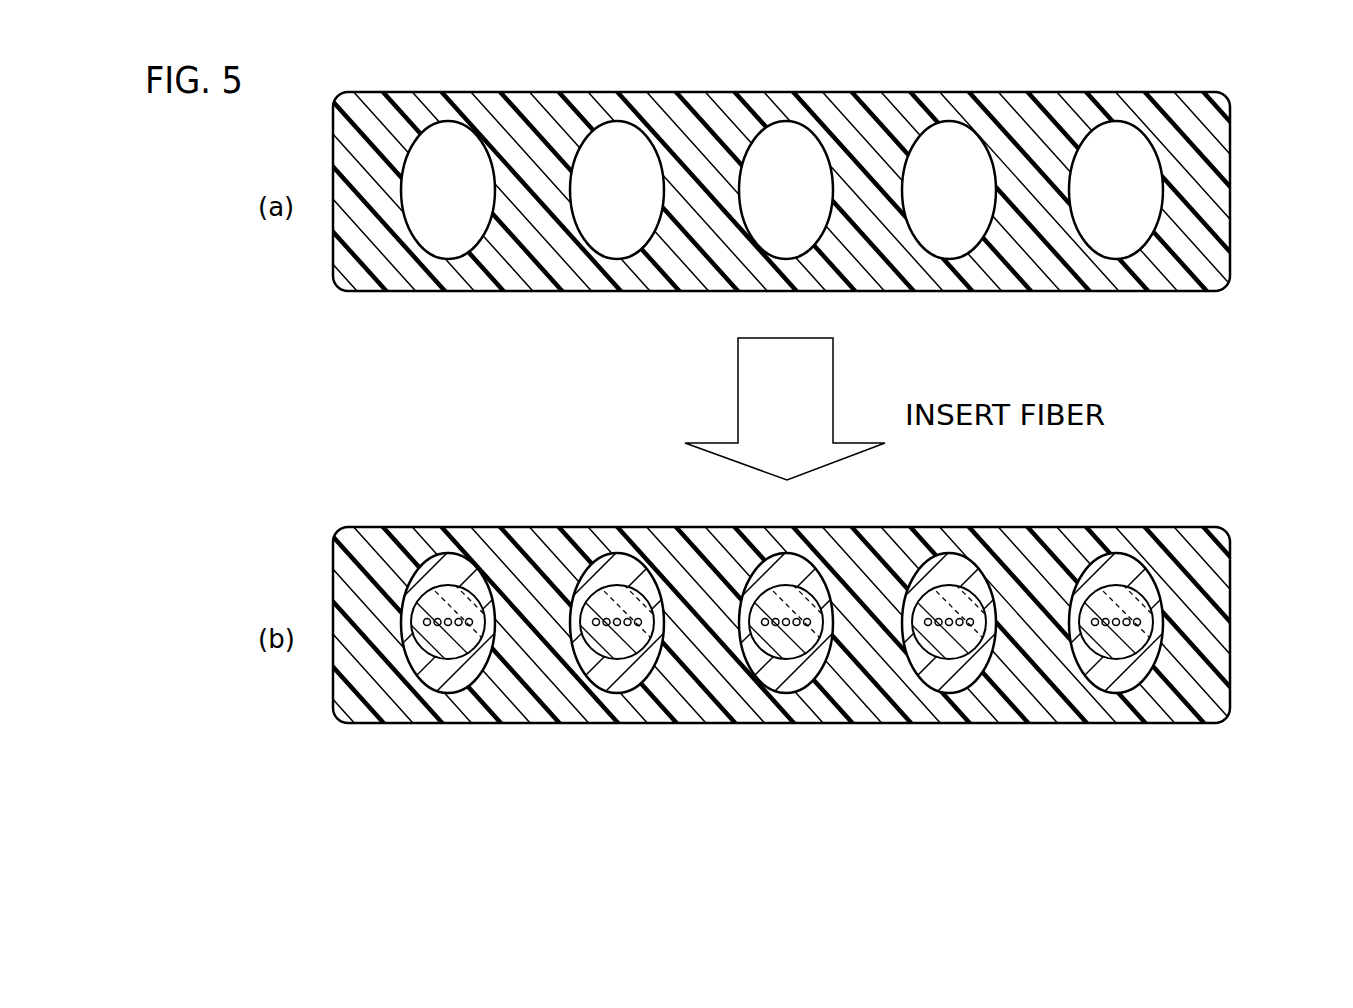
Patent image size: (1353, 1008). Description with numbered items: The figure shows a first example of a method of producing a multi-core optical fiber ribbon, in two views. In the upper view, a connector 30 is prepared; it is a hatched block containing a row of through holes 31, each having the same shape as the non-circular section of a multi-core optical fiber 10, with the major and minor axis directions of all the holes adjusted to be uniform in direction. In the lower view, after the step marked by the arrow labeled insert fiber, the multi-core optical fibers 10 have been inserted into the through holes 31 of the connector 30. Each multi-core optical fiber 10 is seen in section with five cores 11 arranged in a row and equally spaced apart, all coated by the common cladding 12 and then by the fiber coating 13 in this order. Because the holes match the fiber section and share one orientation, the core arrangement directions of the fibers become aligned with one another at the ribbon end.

The multi-core optical fiber 10 is at (776, 698).
The core 11 is at (467, 633).
The cladding 12 is at (428, 648).
The fiber coating 13 is at (441, 683).
The connector 30 is at (1212, 203).
The through hole 31 is at (432, 228).